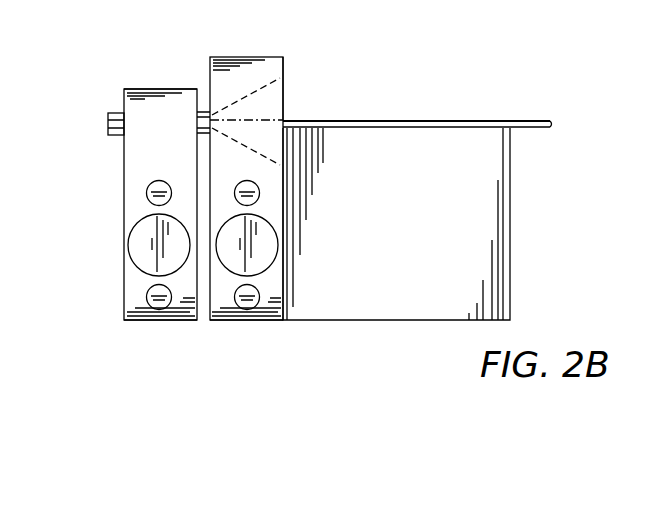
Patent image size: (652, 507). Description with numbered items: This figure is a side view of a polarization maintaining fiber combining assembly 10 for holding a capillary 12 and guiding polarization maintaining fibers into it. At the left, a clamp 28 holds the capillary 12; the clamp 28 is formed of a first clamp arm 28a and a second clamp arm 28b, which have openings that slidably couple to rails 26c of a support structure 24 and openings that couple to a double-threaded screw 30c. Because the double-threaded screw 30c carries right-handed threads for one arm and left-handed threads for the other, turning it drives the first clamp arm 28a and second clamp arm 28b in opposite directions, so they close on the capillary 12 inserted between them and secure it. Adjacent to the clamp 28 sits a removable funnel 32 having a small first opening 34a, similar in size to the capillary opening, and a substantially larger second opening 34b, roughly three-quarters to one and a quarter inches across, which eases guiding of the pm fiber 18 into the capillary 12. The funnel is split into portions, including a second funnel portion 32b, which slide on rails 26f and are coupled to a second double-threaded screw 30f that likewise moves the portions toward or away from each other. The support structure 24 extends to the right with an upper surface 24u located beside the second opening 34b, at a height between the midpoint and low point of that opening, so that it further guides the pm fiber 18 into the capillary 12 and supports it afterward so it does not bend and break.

The pm fiber combining assembly 10 is at (478, 98).
The capillary 12 is at (108, 125).
The pm fiber 18 is at (545, 122).
The support structure 24 is at (512, 218).
The upper surface 24u is at (383, 130).
The rails 26c is at (147, 192).
The rails 26f is at (260, 193).
The clamp 28 is at (89, 0).
The first clamp arm 28a is at (160, 45).
The second clamp arm 28b is at (153, 342).
The double-threaded screw 30c is at (133, 245).
The double-threaded screw 30f is at (272, 248).
The removable funnel 32 is at (215, 323).
The second funnel portion 32b is at (265, 322).
The first opening 34a is at (212, 113).
The second opening 34b is at (287, 97).